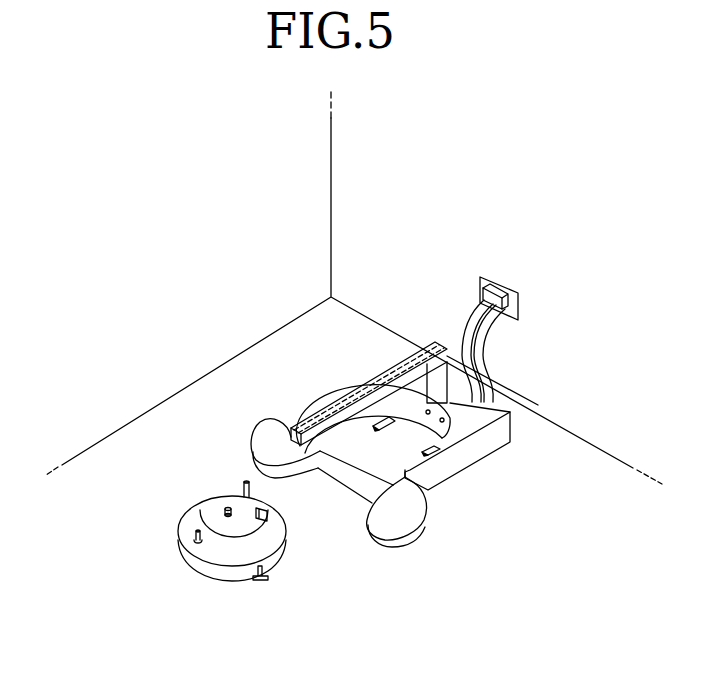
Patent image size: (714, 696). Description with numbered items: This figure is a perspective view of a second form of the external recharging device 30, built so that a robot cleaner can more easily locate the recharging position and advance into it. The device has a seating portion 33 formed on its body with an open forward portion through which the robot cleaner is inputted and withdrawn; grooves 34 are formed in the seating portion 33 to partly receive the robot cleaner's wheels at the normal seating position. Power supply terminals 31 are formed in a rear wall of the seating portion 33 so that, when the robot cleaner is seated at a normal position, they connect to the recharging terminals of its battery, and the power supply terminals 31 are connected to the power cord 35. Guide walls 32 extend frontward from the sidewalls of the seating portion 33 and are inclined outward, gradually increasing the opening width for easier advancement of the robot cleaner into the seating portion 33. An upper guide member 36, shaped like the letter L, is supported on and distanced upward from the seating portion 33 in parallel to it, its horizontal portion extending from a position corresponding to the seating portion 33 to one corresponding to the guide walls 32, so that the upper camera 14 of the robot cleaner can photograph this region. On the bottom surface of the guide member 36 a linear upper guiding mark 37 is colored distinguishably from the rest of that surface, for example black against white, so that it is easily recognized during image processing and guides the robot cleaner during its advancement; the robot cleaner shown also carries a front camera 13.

The front camera 13 is at (283, 553).
The upper camera 14 is at (226, 508).
The external recharging device 30 is at (293, 352).
The power supply terminals 31 is at (507, 398).
The guide walls 32 is at (275, 460).
The seating portion 33 is at (373, 457).
The grooves 34 is at (372, 428).
The power cord 35 is at (490, 283).
The upper guide member 36 is at (432, 346).
The upper guiding mark 37 is at (380, 374).